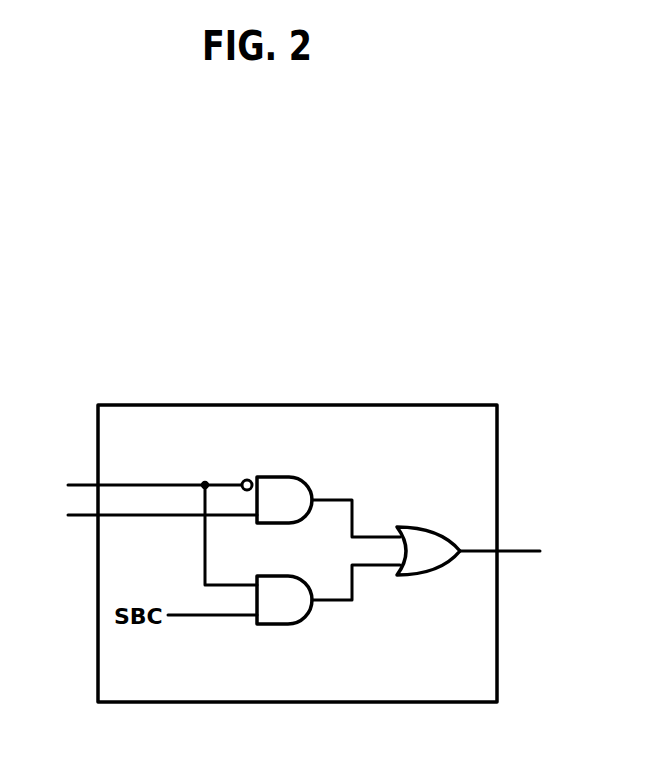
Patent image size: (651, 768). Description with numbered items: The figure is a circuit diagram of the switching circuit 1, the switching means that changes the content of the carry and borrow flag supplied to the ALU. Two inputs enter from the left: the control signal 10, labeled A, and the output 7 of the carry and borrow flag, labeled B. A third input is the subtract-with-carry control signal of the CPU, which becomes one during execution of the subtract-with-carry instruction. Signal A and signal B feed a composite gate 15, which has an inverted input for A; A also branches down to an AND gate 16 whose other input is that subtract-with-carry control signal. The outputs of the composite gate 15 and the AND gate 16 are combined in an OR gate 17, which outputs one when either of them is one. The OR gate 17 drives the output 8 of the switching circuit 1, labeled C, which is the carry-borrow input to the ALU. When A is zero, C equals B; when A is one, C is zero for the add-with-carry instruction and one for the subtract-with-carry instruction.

The switching circuit 1 is at (384, 404).
The control signal 10 is at (79, 478).
The output of the carry and borrow flag 7 is at (76, 522).
The composite gate 15 is at (290, 477).
The AND gate 16 is at (288, 577).
The OR gate 17 is at (418, 526).
The output of the switching circuit 8 is at (517, 550).